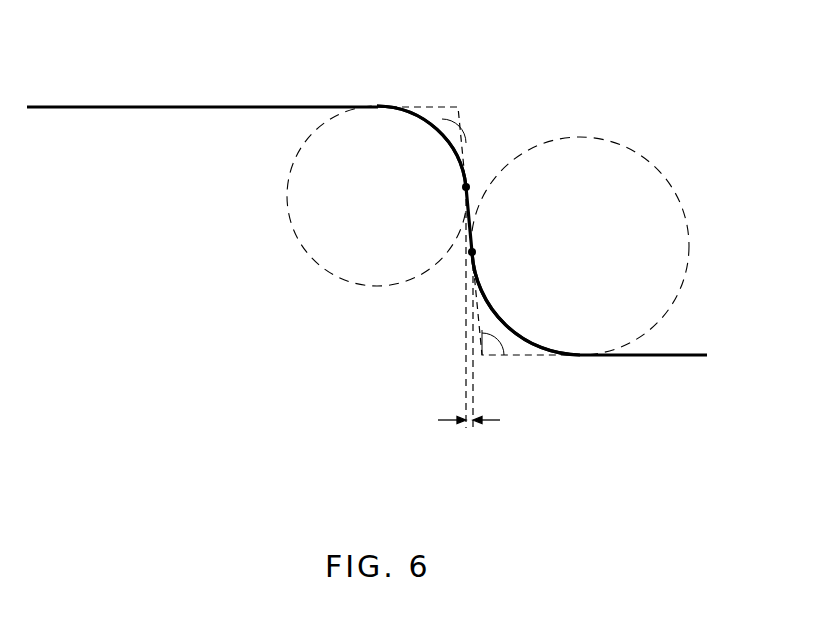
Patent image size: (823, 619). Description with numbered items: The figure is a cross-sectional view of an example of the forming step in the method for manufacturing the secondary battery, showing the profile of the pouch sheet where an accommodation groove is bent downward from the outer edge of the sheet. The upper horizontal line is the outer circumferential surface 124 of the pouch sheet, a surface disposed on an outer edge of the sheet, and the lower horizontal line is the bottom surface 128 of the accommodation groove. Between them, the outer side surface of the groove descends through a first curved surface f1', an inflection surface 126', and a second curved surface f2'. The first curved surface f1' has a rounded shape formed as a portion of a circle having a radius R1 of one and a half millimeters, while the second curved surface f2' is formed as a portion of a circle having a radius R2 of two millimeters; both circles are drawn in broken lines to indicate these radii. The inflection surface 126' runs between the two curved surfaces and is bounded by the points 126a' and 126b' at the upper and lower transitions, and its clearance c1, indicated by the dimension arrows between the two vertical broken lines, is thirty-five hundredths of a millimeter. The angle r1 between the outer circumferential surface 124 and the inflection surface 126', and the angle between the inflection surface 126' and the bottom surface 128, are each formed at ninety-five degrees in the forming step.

The outer circumferential surface 124 is at (103, 107).
The inflection surface 126' is at (490, 212).
The first inflection point 126a' is at (413, 200).
The second inflection point 126b' is at (533, 270).
The bottom surface 128 is at (663, 357).
The first curved surface f1' is at (358, 101).
The second curved surface f2' is at (534, 303).
The angle r1 is at (442, 119).
The radius R1 is at (296, 235).
The radius R2 is at (687, 226).
The clearance c1 is at (469, 436).